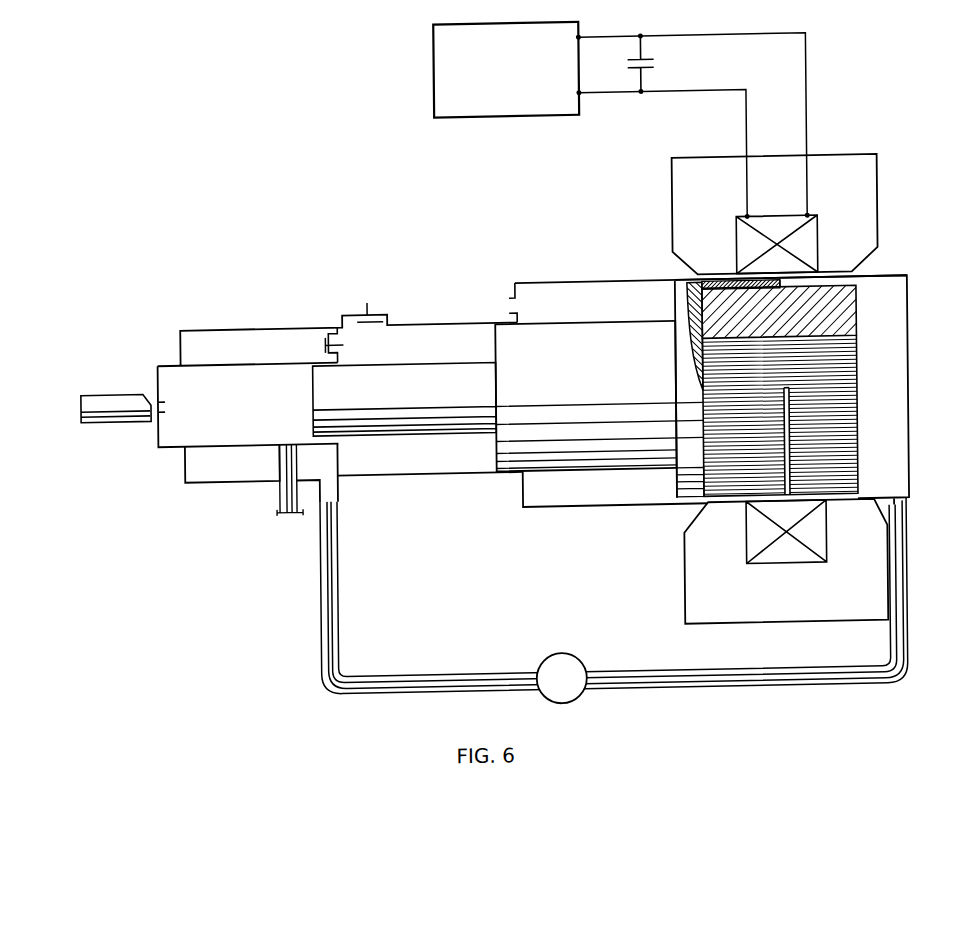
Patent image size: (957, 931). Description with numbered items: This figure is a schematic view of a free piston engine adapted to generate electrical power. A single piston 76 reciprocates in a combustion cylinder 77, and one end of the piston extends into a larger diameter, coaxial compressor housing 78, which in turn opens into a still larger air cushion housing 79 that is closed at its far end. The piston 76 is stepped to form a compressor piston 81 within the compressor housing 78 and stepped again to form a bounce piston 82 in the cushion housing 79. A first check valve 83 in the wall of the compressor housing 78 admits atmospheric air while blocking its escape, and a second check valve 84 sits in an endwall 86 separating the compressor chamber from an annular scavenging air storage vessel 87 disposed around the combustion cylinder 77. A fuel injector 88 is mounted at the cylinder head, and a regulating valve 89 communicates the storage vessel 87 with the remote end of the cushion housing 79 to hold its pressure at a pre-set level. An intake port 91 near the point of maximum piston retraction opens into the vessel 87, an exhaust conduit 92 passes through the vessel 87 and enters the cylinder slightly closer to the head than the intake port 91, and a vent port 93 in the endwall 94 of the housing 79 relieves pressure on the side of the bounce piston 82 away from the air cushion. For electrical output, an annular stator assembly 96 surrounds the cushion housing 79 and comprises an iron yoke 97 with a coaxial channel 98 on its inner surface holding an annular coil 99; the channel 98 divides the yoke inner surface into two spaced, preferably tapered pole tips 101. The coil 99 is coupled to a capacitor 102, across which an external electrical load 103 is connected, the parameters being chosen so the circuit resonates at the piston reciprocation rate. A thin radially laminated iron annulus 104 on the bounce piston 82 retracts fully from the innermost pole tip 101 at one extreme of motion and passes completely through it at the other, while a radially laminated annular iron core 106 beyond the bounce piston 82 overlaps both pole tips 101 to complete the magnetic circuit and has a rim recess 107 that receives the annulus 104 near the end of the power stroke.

The piston 76 is at (380, 403).
The combustion cylinder 77 is at (204, 441).
The compressor housing 78 is at (409, 473).
The air cushion housing 79 is at (867, 290).
The compressor piston 81 is at (496, 349).
The bounce piston 82 is at (679, 485).
The first check valve 83 is at (369, 301).
The second check valve 84 is at (345, 346).
The endwall 86 is at (338, 452).
The scavenging air storage vessel 87 is at (213, 324).
The fuel injector 88 is at (93, 387).
The regulating valve 89 is at (542, 655).
The intake port 91 is at (308, 354).
The exhaust conduit 92 is at (279, 495).
The vent port 93 is at (515, 296).
The endwall 94 is at (522, 488).
The stator assembly 96 is at (890, 217).
The iron yoke 97 is at (838, 161).
The channel 98 is at (819, 230).
The coil 99 is at (788, 560).
The pole tips 101 is at (849, 502).
The capacitor 102 is at (652, 66).
The external electrical load 103 is at (437, 48).
The radially laminated iron annulus 104 is at (706, 287).
The iron core 106 is at (858, 325).
The recess 107 is at (691, 303).